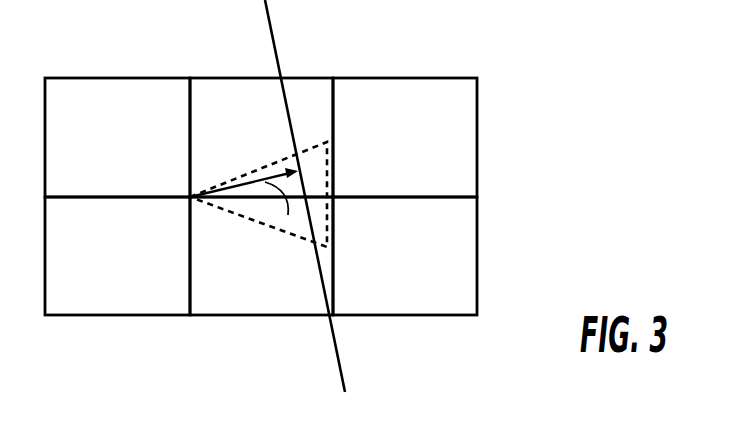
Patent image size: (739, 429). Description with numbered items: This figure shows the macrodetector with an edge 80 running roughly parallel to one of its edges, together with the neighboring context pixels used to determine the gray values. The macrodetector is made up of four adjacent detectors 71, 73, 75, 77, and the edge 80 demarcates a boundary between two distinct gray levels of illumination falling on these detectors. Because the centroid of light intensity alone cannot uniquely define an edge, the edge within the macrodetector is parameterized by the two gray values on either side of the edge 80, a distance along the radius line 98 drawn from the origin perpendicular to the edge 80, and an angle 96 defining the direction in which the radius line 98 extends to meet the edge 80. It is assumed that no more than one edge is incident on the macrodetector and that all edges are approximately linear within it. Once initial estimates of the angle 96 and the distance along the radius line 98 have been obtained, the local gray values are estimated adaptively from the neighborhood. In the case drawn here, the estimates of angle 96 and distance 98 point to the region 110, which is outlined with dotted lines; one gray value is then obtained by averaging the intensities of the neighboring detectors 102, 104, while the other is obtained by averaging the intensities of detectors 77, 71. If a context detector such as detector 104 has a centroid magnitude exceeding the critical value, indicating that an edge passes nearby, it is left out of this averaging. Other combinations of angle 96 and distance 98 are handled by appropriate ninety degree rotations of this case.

The detector 71 is at (125, 324).
The detector 73 is at (262, 324).
The detector 75 is at (232, 70).
The detector 77 is at (117, 70).
The edge 80 is at (275, 33).
The angle 96 is at (288, 215).
The radius line 98 is at (252, 180).
The neighboring detector 102 is at (490, 253).
The neighboring detector 104 is at (490, 140).
The region 110 is at (252, 220).